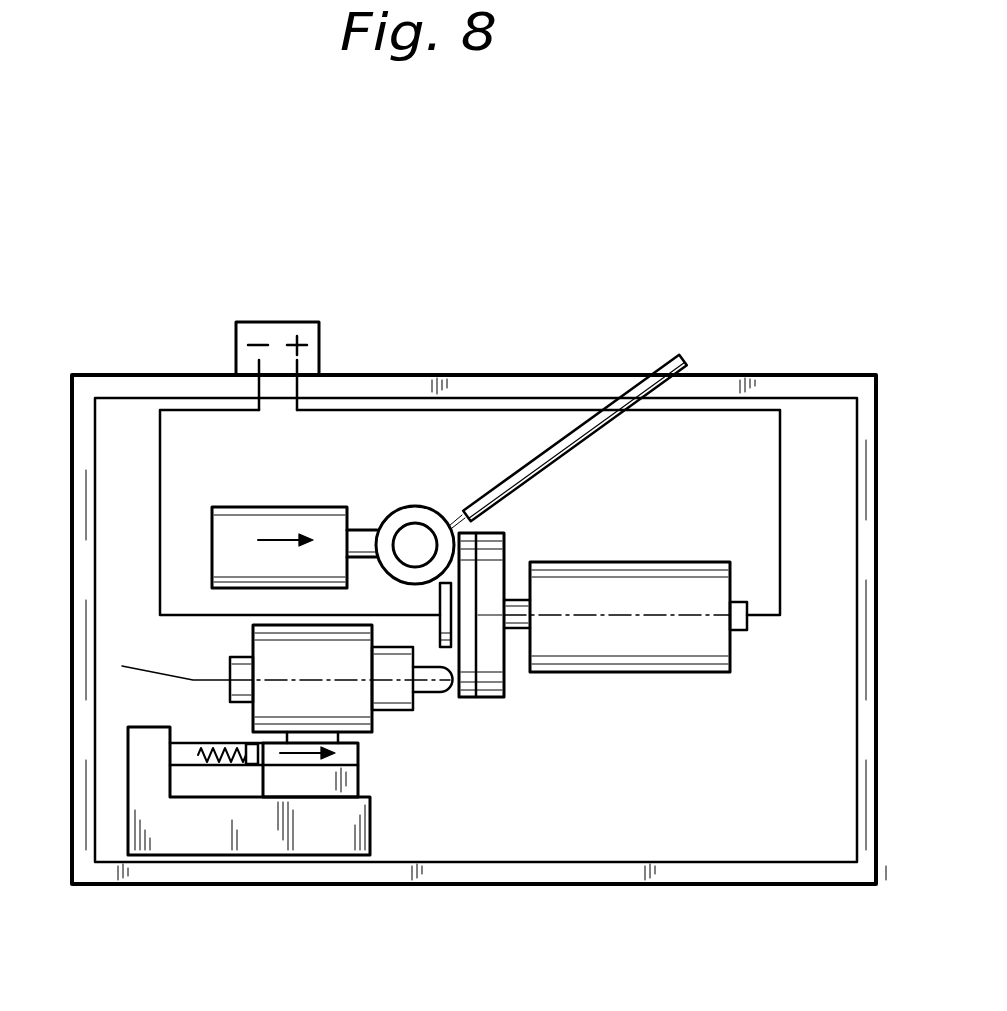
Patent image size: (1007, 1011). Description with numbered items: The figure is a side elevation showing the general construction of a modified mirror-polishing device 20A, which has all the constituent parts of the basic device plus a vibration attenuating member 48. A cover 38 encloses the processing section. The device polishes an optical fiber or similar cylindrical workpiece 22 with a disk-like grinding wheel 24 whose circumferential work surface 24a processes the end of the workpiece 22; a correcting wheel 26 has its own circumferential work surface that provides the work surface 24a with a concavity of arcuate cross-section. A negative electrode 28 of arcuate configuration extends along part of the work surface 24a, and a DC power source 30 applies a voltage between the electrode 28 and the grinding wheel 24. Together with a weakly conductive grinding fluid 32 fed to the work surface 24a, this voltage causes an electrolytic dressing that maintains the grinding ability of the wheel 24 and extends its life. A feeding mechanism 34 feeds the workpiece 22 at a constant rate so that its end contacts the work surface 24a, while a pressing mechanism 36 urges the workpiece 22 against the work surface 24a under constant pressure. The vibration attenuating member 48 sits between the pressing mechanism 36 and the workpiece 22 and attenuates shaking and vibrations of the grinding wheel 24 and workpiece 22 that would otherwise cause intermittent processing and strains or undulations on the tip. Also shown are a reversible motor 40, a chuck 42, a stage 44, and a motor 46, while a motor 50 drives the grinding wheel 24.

The polishing device 20A is at (474, 480).
The workpiece 22 is at (465, 815).
The grinding wheel 24 is at (538, 748).
The work surface 24a is at (512, 500).
The correcting wheel 26 is at (429, 438).
The negative electrode 28 is at (536, 475).
The DC power source 30 is at (246, 330).
The grinding fluid 32 is at (594, 413).
The feeding mechanism 34 is at (264, 853).
The pressing mechanism 36 is at (245, 845).
The cover 38 is at (486, 584).
The reversible motor 40 is at (250, 794).
The chuck 42 is at (410, 805).
The stage 44 is at (254, 444).
The motor 46 is at (399, 445).
The vibration attenuating member 48 is at (236, 853).
The motor 50 is at (638, 762).